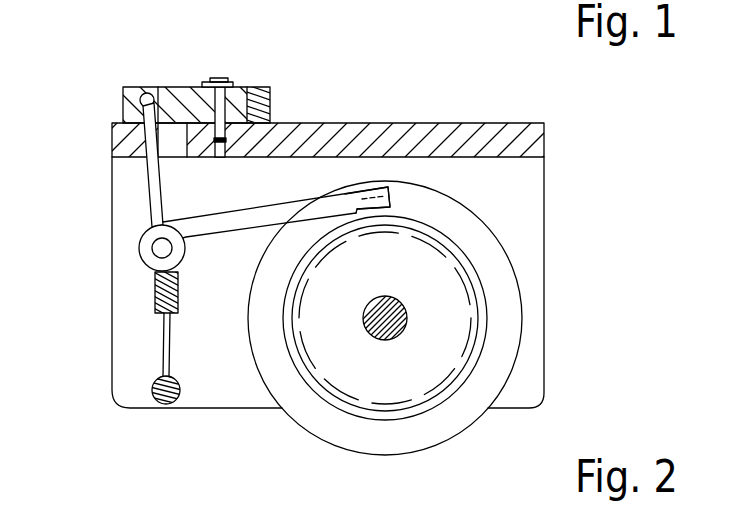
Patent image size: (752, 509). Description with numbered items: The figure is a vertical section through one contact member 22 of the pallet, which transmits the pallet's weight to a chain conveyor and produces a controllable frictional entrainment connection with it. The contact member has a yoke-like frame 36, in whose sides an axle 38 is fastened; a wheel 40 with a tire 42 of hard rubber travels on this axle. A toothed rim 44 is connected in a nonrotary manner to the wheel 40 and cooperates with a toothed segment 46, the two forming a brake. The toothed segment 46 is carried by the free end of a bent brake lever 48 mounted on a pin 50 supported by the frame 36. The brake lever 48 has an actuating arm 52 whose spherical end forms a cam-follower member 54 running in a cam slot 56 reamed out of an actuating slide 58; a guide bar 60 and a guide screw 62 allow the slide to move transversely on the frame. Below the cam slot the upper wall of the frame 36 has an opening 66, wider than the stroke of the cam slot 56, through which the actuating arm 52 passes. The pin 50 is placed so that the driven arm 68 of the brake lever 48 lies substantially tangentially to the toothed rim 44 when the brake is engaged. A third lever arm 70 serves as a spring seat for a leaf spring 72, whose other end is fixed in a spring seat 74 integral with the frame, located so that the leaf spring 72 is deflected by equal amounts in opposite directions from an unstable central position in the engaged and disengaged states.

The contact member 22 is at (549, 200).
The yoke-like frame 36 is at (462, 119).
The axle 38 is at (395, 327).
The wheel 40 is at (494, 291).
The tire 42 is at (498, 253).
The toothed rim 44 is at (402, 228).
The toothed segment 46 is at (377, 200).
The brake lever 48 is at (247, 210).
The pin 50 is at (162, 248).
The actuating arm 52 is at (174, 118).
The cam-follower member 54 is at (144, 91).
The cam slot 56 is at (139, 125).
The actuating slide 58 is at (195, 97).
The guide bar 60 is at (257, 88).
The guide screw 62 is at (216, 78).
The opening 66 is at (183, 124).
The driven arm 68 is at (268, 212).
The third lever arm 70 is at (156, 297).
The leaf spring 72 is at (170, 339).
The spring seat 74 is at (152, 398).